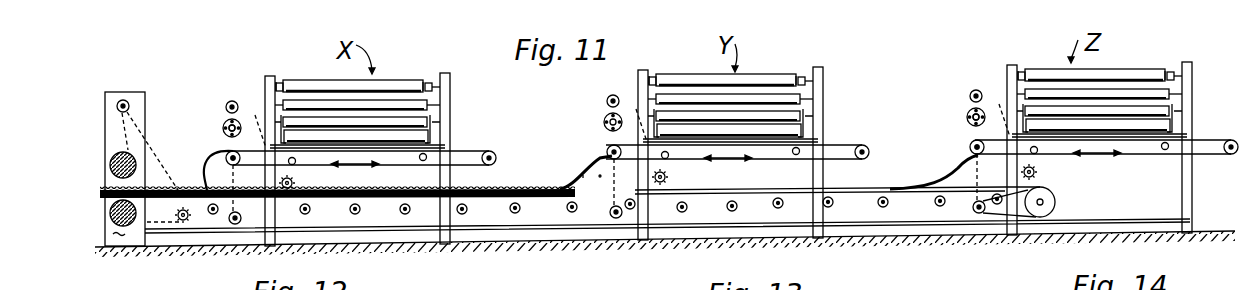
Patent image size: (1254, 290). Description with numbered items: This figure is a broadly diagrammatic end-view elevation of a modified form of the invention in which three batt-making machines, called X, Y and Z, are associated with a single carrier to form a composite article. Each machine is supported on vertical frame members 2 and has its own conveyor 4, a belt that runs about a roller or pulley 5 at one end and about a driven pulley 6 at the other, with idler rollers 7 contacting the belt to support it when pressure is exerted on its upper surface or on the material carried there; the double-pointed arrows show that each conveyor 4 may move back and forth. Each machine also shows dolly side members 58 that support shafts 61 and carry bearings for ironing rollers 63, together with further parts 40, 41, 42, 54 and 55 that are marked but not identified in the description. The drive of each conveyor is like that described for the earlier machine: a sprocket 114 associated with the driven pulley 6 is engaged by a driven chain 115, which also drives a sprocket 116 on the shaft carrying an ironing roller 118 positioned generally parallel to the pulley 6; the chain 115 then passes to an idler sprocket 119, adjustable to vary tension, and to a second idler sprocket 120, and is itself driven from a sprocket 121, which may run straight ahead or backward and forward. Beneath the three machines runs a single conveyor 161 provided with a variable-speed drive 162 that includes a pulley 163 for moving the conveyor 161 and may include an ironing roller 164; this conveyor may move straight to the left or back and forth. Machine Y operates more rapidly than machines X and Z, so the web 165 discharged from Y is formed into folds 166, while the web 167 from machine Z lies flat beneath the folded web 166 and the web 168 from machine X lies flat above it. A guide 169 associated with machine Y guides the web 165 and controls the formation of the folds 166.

The vertical frame members 2 is at (262, 79).
The belt or conveyor 4 is at (480, 151).
The roller or pulley 5 is at (492, 153).
The driven pulley 6 is at (604, 160).
The idler rollers 7 is at (419, 157).
The upper roller 40 is at (383, 80).
The roller journal 41 is at (427, 80).
The bearing 42 is at (278, 82).
The roller 54 is at (428, 104).
The roller 55 is at (430, 109).
The dolly side members 58 is at (432, 125).
The shafts 61 is at (343, 126).
The ironing rollers 63 is at (445, 147).
The sprocket 114 is at (214, 160).
The driven chain 115 is at (254, 113).
The sprocket 116 is at (226, 129).
The ironing roller 118 is at (226, 122).
The idler sprocket 119 is at (231, 101).
The second idler sprocket 120 is at (235, 224).
The sprocket 121 is at (293, 182).
The single conveyor 161 is at (918, 200).
The drive 162 is at (162, 143).
The pulley 163 is at (123, 226).
The ironing roller 164 is at (111, 160).
The web 165 is at (585, 170).
The folds 166 is at (522, 188).
The web 167 is at (962, 160).
The web 168 is at (205, 162).
The guide 169 is at (600, 175).